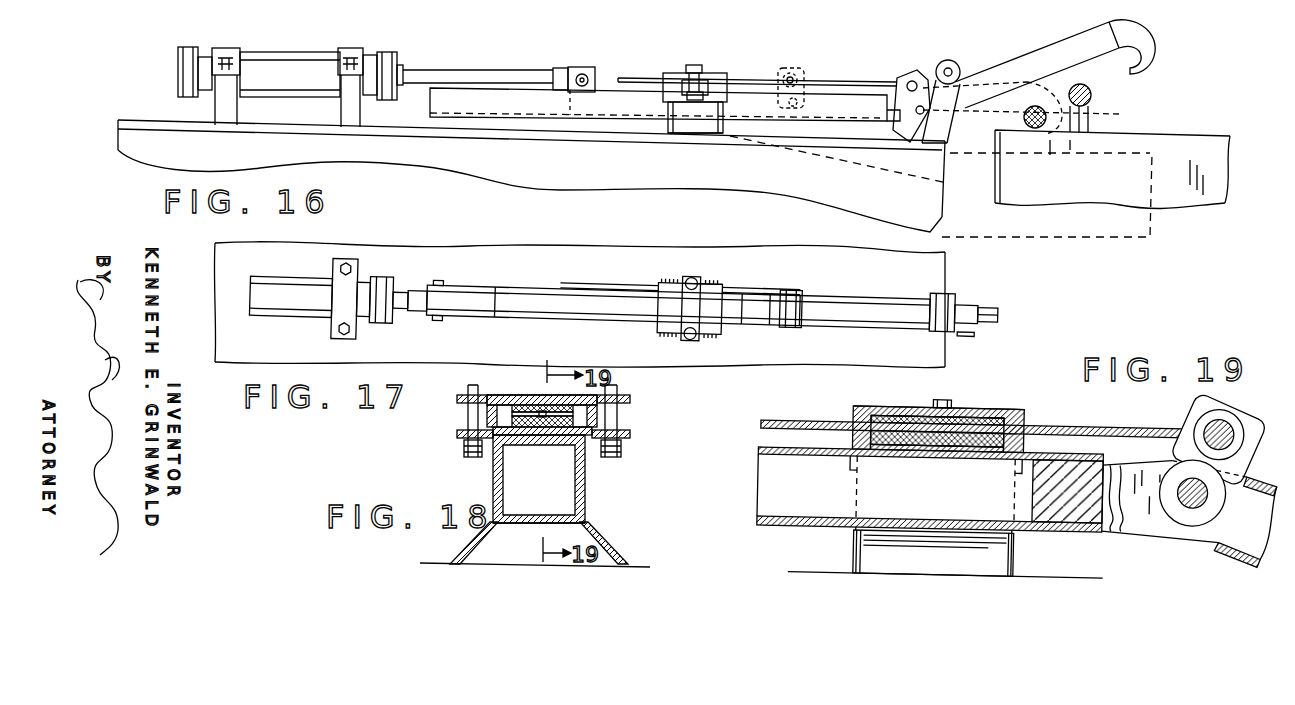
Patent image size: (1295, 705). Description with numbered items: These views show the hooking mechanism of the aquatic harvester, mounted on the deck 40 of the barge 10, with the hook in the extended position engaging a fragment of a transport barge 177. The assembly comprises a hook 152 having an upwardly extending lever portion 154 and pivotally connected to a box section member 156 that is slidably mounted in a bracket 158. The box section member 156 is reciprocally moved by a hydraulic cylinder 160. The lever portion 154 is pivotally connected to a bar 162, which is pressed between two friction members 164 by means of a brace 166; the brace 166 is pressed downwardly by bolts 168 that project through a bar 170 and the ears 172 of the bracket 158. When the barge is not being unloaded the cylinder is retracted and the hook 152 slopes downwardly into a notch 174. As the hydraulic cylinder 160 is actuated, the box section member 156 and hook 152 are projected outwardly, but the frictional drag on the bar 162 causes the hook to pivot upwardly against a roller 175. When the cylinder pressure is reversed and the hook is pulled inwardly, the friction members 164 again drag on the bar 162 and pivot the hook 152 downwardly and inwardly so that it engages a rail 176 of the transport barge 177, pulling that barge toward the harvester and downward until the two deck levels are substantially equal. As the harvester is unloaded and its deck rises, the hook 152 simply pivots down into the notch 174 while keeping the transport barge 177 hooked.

In FIG. 16, the barge 10 is at (118, 148).
In FIG. 17, the barge 10 is at (410, 250).
In FIG. 16, the deck 40 is at (148, 120).
In FIG. 17, the deck 40 is at (278, 352).
In FIG. 18, the deck 40 is at (643, 563).
In FIG. 19, the deck 40 is at (1067, 578).
In FIG. 16, the hook 152 is at (1071, 48).
In FIG. 17, the hook 152 is at (998, 313).
In FIG. 19, the hook 152 is at (1238, 560).
In FIG. 16, the lever portion 154 is at (808, 67).
In FIG. 17, the lever portion 154 is at (798, 300).
In FIG. 19, the lever portion 154 is at (1195, 402).
In FIG. 16, the box section member 156 is at (460, 100).
In FIG. 17, the box section member 156 is at (468, 284).
In FIG. 18, the box section member 156 is at (560, 508).
In FIG. 19, the box section member 156 is at (772, 496).
In FIG. 16, the bracket 158 is at (660, 106).
In FIG. 17, the bracket 158 is at (728, 279).
In FIG. 18, the bracket 158 is at (481, 477).
In FIG. 19, the bracket 158 is at (846, 540).
In FIG. 16, the hydraulic cylinder 160 is at (286, 71).
In FIG. 17, the hydraulic cylinder 160 is at (272, 296).
In FIG. 16, the bar 162 is at (757, 82).
In FIG. 17, the bar 162 is at (566, 302).
In FIG. 18, the bar 162 is at (590, 404).
In FIG. 19, the bar 162 is at (818, 416).
In FIG. 18, the friction members 164 is at (531, 398).
In FIG. 19, the friction members 164 is at (1003, 416).
In FIG. 16, the brace 166 is at (673, 78).
In FIG. 17, the brace 166 is at (666, 304).
In FIG. 18, the brace 166 is at (490, 406).
In FIG. 19, the brace 166 is at (887, 408).
In FIG. 16, the bolts 168 is at (697, 65).
In FIG. 17, the bolts 168 is at (690, 277).
In FIG. 18, the bolts 168 is at (463, 381).
In FIG. 19, the bolts 168 is at (940, 398).
In FIG. 16, the bar 170 is at (712, 74).
In FIG. 17, the bar 170 is at (684, 280).
In FIG. 18, the bar 170 is at (630, 401).
In FIG. 19, the bar 170 is at (963, 408).
In FIG. 16, the ears 172 is at (703, 105).
In FIG. 18, the ears 172 is at (457, 436).
In FIG. 16, the notch 174 is at (887, 173).
In FIG. 16, the roller 175 is at (954, 61).
In FIG. 17, the roller 175 is at (950, 310).
In FIG. 16, the rail 176 is at (1089, 97).
In FIG. 16, the transport barge 177 is at (1207, 205).